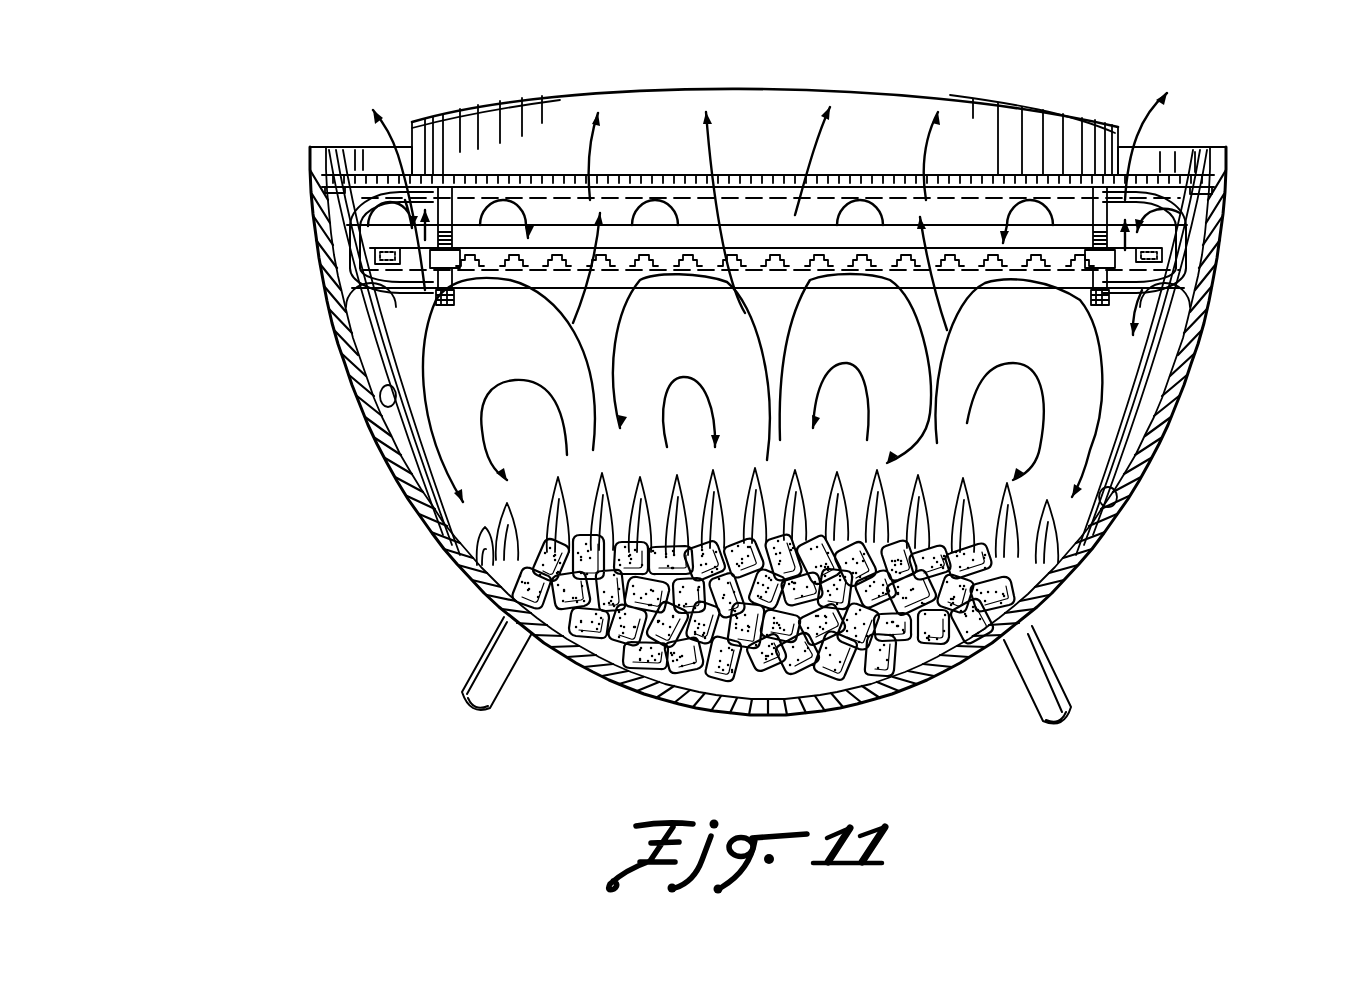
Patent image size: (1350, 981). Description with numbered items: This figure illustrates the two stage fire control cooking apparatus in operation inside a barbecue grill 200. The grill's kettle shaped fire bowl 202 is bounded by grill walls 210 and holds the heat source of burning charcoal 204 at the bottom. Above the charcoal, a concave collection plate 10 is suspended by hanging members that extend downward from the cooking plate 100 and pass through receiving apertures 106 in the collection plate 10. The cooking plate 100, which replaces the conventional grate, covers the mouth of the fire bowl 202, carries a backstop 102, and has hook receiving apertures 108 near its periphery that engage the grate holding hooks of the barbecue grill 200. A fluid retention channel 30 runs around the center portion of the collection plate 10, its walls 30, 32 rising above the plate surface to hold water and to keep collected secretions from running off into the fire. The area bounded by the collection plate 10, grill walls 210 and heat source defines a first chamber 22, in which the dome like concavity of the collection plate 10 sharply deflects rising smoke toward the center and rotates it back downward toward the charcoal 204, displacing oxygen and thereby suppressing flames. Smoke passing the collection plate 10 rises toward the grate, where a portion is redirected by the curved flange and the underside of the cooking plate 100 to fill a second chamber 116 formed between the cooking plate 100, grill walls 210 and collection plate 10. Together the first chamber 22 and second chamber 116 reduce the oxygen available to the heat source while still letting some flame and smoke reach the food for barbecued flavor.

The collection plate 10 is at (1190, 264).
The first chamber 22 is at (1077, 418).
The fluid retention channel 30 is at (400, 290).
The retention channel wall 32 is at (375, 253).
The cooking plate 100 is at (1188, 165).
The backstop 102 is at (650, 117).
The receiving apertures 106 is at (362, 327).
The hook receiving apertures 108 is at (322, 181).
The second chamber 116 is at (981, 240).
The barbecue grill 200 is at (288, 229).
The fire bowl 202 is at (1190, 360).
The charcoal 204 is at (500, 602).
The grill walls 210 is at (387, 391).